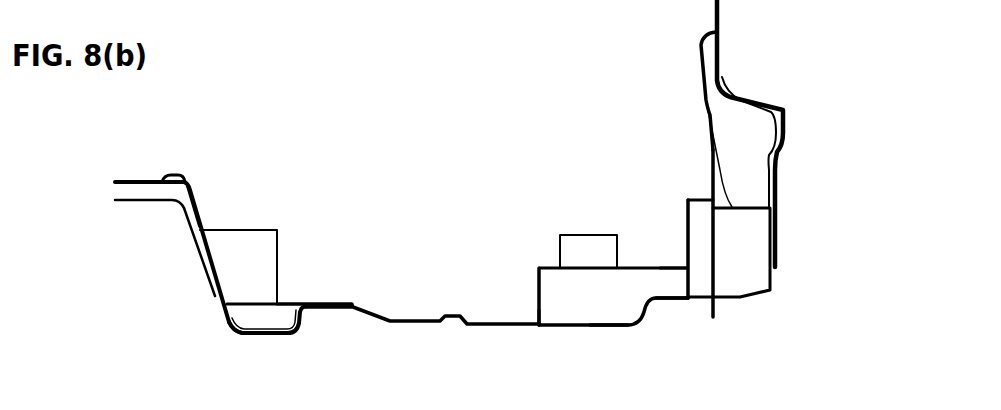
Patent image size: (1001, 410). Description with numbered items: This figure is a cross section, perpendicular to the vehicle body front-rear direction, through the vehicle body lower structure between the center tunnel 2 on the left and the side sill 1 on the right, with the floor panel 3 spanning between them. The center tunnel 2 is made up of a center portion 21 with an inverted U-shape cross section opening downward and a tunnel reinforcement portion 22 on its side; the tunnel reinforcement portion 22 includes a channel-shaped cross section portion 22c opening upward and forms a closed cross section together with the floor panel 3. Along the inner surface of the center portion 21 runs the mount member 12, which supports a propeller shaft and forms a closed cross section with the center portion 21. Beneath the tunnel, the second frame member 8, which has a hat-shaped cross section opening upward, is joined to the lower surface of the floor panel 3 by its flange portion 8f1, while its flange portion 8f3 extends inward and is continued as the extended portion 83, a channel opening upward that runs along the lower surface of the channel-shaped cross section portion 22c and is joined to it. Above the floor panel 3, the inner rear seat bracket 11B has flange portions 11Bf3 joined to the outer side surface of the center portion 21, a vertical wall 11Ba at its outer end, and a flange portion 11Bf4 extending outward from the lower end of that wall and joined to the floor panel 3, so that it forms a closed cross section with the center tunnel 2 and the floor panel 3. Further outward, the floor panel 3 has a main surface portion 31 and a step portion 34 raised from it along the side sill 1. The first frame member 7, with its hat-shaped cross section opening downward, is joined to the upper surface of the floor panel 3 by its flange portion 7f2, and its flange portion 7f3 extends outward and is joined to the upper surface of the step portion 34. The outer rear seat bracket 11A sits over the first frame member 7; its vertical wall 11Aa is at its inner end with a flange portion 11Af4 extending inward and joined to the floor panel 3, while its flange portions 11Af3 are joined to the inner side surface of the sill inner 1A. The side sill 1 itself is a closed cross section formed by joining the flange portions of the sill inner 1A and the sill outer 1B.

The side sill 1 is at (710, 158).
The sill inner 1A is at (690, 198).
The sill outer 1B is at (707, 108).
The center tunnel 2 is at (186, 274).
The center portion 21 is at (173, 237).
The tunnel reinforcement portion 22 is at (204, 297).
The channel-shaped cross section portion 22c is at (252, 340).
The mount member 12 is at (137, 202).
The extended portion 83 is at (236, 338).
The second frame member 8 is at (301, 357).
The flange portion 8f1 is at (330, 310).
The flange portion 8f3 is at (283, 337).
The inner rear seat bracket 11B is at (276, 256).
The vertical wall 11Ba is at (280, 250).
The flange portion 11Bf3 is at (204, 220).
The flange portion 11Bf4 is at (289, 300).
The main surface portion 31 is at (422, 293).
The floor panel 3 is at (390, 318).
The outer rear seat bracket 11A is at (574, 277).
The vertical wall 11Aa is at (538, 298).
The flange portion 11Af3 is at (686, 254).
The flange portion 11Af4 is at (538, 322).
The first frame member 7 is at (613, 267).
The flange portion 7f2 is at (610, 322).
The flange portion 7f3 is at (670, 292).
The step portion 34 is at (677, 292).